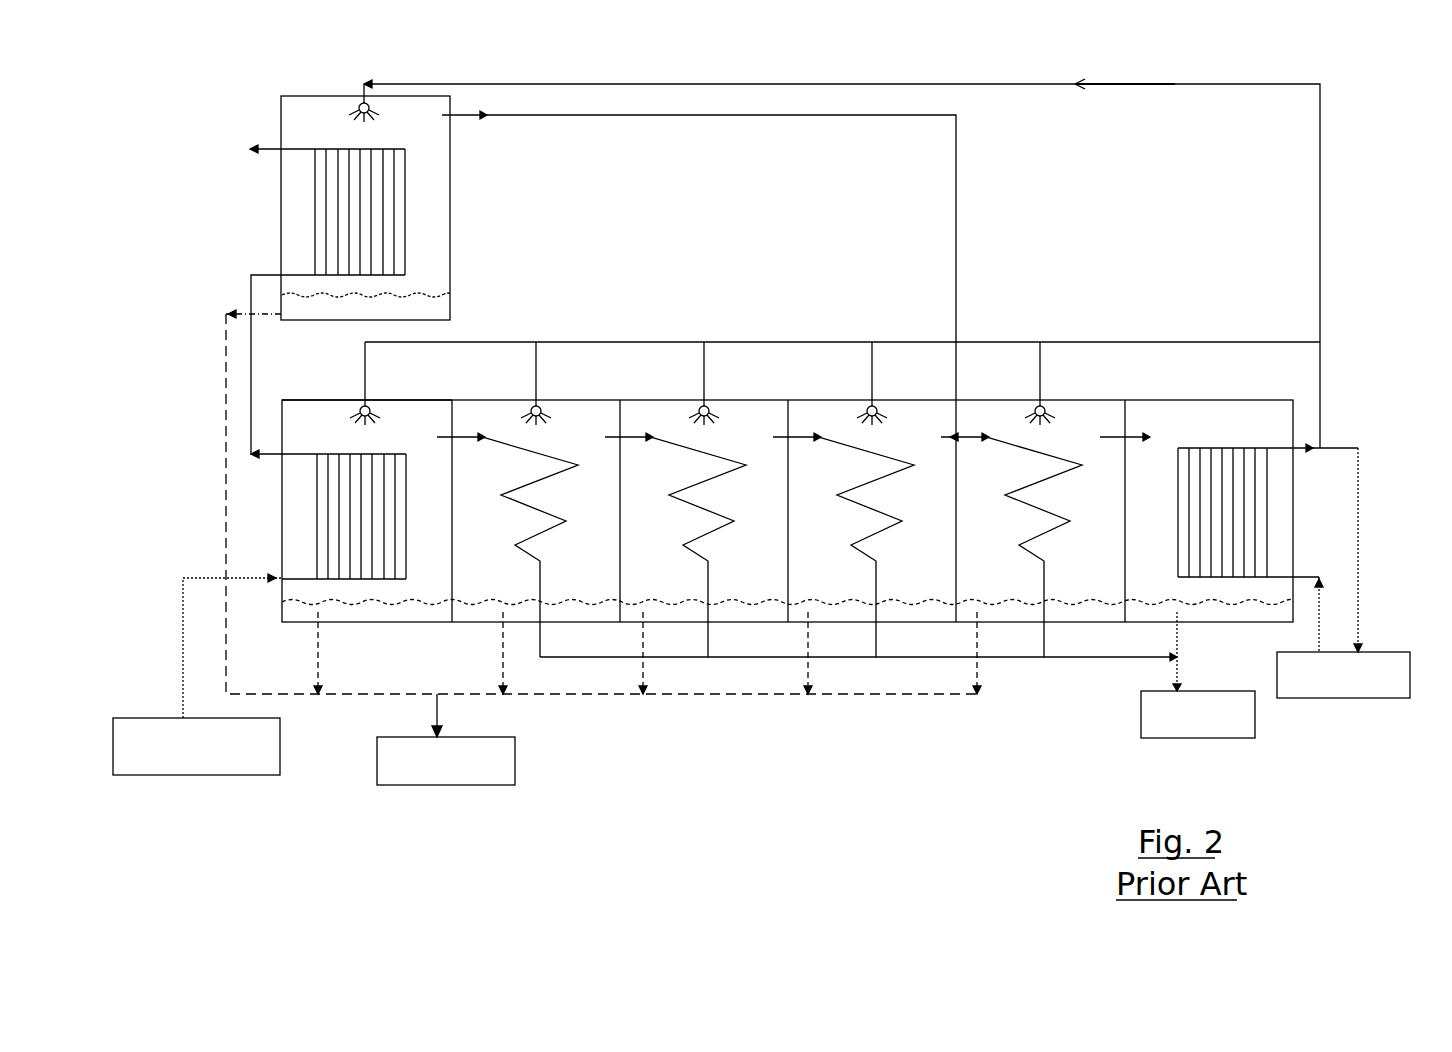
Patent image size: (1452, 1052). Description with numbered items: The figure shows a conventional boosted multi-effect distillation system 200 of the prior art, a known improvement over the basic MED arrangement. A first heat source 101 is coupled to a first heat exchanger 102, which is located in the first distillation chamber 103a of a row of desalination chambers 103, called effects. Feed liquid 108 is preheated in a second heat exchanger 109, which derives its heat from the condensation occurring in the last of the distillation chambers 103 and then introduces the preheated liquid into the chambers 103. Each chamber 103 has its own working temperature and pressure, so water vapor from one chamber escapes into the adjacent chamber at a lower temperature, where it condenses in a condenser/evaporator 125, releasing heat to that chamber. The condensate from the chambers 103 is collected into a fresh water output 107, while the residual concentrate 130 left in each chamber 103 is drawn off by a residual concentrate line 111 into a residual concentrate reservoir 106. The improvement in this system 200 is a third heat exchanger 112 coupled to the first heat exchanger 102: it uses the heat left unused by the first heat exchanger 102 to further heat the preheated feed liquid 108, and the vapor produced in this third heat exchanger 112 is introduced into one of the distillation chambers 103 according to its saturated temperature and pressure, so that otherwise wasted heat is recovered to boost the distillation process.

The boosted MED system 200 is at (826, 46).
The third heat exchanger 112 is at (424, 257).
The desalination chamber 103 is at (585, 428).
The first distillation chamber 103a is at (312, 423).
The first heat exchanger 102 is at (295, 545).
The first heat source 101 is at (197, 674).
The residual concentrate reservoir 106 is at (446, 739).
The fresh water output 107 is at (1198, 714).
The feed liquid 108 is at (1343, 573).
The second heat exchanger 109 is at (1242, 518).
The residual concentrate line 111 is at (517, 692).
The condenser/evaporator 125 is at (862, 512).
The residual concentrate 130 is at (915, 612).